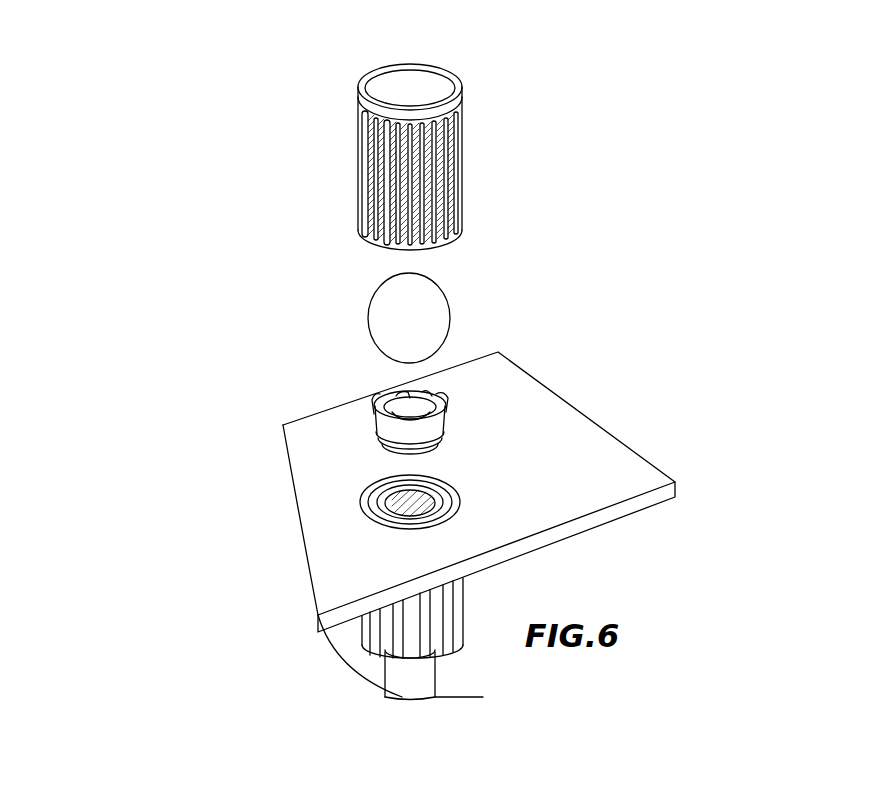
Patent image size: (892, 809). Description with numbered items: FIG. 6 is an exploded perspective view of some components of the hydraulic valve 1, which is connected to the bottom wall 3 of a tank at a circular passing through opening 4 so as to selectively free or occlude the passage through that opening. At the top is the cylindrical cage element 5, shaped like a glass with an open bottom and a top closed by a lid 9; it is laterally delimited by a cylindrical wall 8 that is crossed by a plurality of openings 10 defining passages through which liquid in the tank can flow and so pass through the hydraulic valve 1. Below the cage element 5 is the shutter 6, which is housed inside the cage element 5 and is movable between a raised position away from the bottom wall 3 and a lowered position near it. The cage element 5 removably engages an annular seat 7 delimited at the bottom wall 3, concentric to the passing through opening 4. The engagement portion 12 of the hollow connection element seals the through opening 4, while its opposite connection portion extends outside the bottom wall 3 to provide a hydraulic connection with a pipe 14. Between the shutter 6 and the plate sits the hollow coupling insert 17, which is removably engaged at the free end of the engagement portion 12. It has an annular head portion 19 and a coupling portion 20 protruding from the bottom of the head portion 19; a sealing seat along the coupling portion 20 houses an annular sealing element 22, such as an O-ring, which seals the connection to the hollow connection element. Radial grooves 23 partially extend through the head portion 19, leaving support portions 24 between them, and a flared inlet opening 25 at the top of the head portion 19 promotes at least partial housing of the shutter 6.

The hydraulic valve 1 is at (191, 167).
The bottom wall 3 is at (578, 426).
The passing through opening 4 is at (378, 522).
The cage element 5 is at (526, 139).
The shutter 6 is at (437, 320).
The annular seat 7 is at (460, 519).
The cylindrical wall 8 is at (358, 152).
The lid 9 is at (408, 96).
The openings 10 is at (430, 190).
The engagement portion 12 is at (410, 500).
The pipe 14 is at (385, 690).
The hollow coupling insert 17 is at (362, 403).
The head portion 19 is at (447, 413).
The coupling portion 20 is at (380, 450).
The annular sealing element 22 is at (447, 430).
The radial grooves 23 is at (386, 383).
The support portions 24 is at (412, 406).
The inlet opening 25 is at (376, 418).